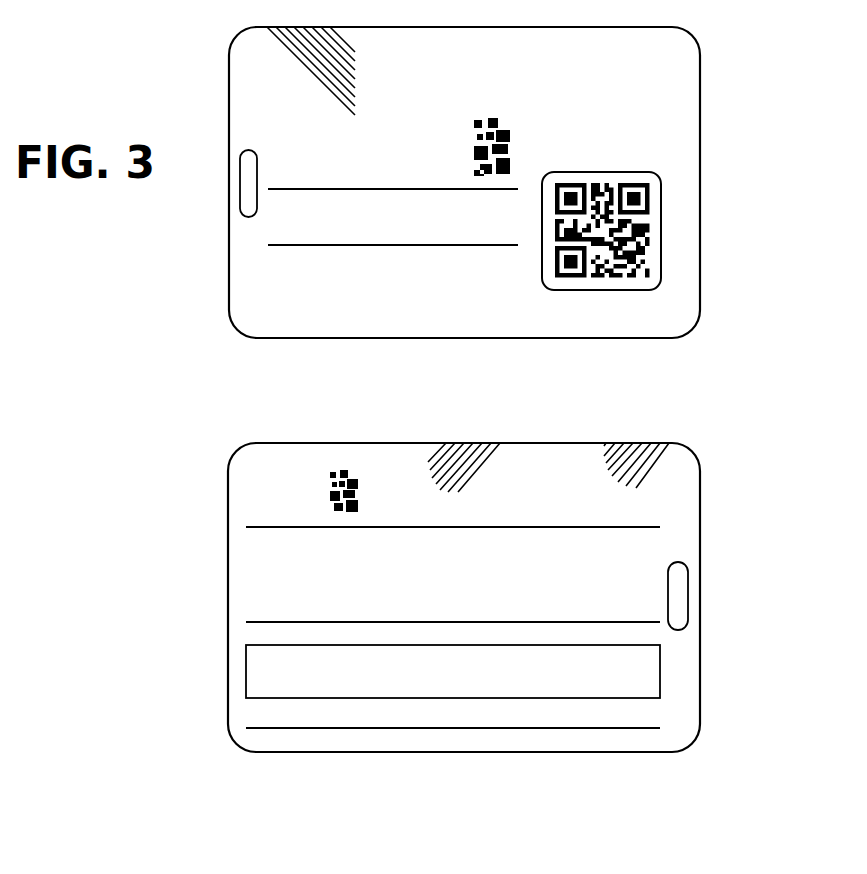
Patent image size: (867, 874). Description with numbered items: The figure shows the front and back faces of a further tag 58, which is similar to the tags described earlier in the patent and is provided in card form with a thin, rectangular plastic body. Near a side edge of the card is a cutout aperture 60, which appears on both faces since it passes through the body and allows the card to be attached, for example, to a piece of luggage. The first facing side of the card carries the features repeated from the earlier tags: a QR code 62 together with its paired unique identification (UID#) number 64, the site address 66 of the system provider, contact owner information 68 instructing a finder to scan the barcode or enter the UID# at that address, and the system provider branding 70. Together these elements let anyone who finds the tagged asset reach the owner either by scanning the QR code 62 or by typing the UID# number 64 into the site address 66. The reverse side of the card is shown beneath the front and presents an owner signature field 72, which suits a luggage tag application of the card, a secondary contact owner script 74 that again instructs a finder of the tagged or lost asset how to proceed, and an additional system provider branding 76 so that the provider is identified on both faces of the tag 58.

The tag 58 is at (740, 10).
The cutout aperture 60 is at (242, 212).
The QR code 62 is at (610, 186).
The unique identification (UID#) number 64 is at (270, 218).
The site address 66 is at (569, 322).
The contact owner information 68 is at (360, 322).
The system provider branding 70 is at (372, 128).
The owner signature field 72 is at (258, 670).
The secondary contact owner script 74 is at (328, 724).
The additional system provider branding 76 is at (247, 478).